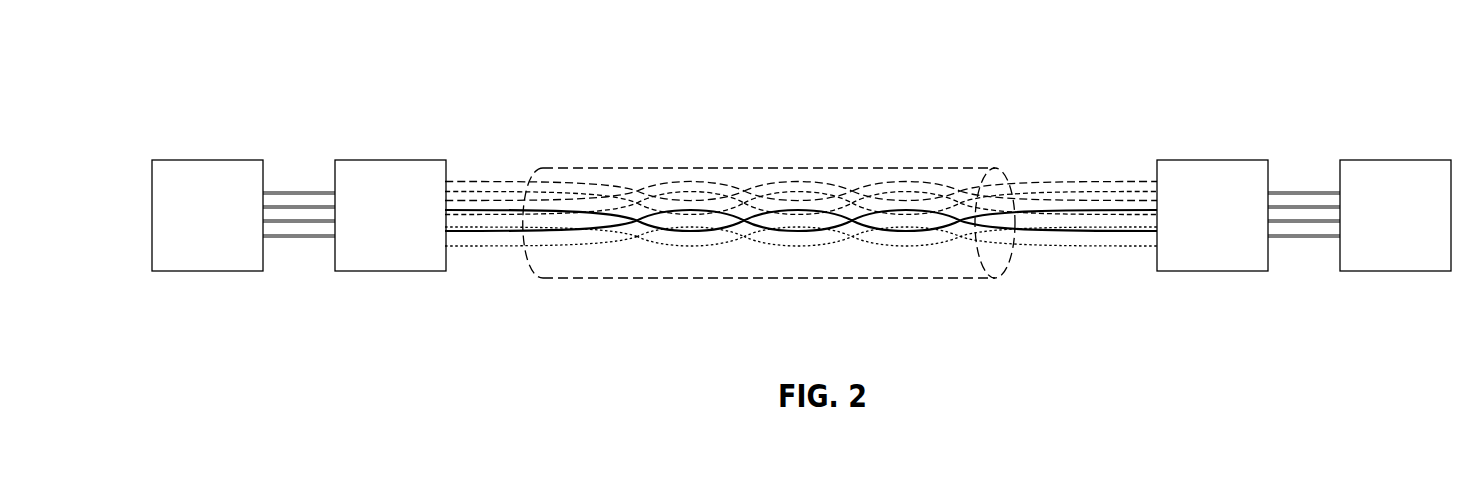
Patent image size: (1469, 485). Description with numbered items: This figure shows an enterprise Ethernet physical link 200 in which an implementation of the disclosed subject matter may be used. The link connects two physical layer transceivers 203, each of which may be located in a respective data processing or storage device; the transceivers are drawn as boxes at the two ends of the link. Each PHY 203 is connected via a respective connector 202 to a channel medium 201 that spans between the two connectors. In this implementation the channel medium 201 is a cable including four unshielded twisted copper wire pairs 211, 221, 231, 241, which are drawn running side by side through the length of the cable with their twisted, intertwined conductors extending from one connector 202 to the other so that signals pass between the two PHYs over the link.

The enterprise Ethernet physical link 200 is at (214, 45).
The channel medium 201 is at (887, 167).
The connector 202 is at (410, 160).
The physical layer transceiver 203 is at (228, 160).
The unshielded twisted copper wire pair 211 is at (1043, 250).
The unshielded twisted copper wire pair 221 is at (1113, 233).
The unshielded twisted copper wire pair 231 is at (1023, 190).
The unshielded twisted copper wire pair 241 is at (1092, 180).